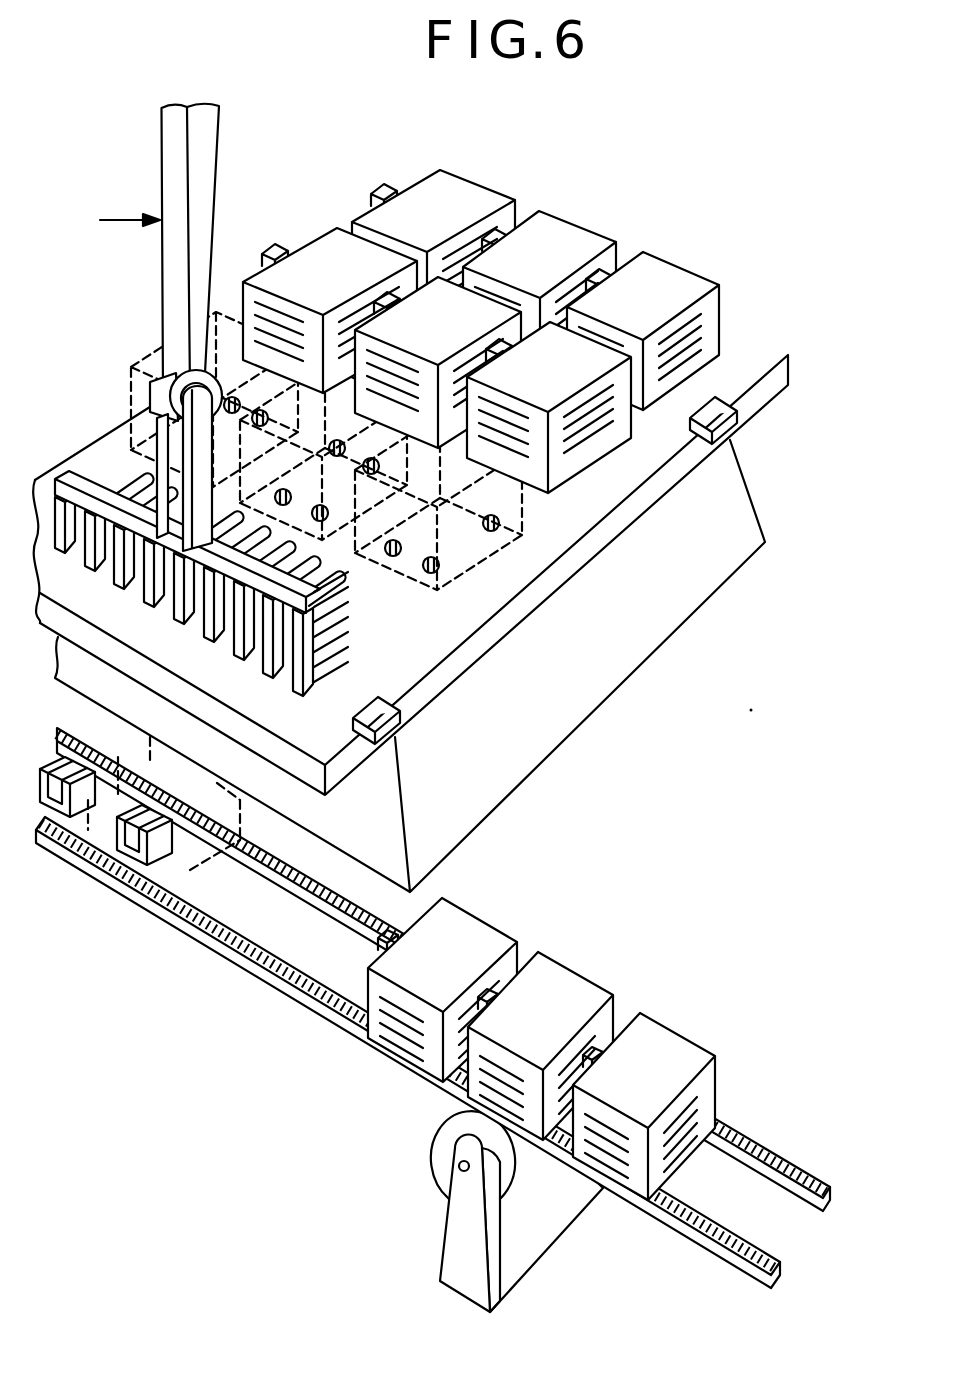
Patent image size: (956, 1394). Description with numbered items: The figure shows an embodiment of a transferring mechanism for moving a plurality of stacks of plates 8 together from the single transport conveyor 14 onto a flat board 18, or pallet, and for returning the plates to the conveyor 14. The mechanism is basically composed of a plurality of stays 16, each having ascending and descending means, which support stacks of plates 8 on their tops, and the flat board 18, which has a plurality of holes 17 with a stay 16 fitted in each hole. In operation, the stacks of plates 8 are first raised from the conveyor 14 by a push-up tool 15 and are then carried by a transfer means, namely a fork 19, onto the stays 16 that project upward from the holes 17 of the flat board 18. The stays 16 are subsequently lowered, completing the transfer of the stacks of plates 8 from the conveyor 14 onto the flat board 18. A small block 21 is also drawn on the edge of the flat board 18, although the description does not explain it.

The stacks of plates 8 is at (482, 205).
The conveyor 14 is at (787, 1150).
The push-up tool 15 is at (106, 890).
The stays 16 is at (503, 527).
The holes 17 is at (497, 513).
The flat board 18 is at (758, 348).
The fork 19 is at (363, 630).
The stopper block 21 is at (738, 432).